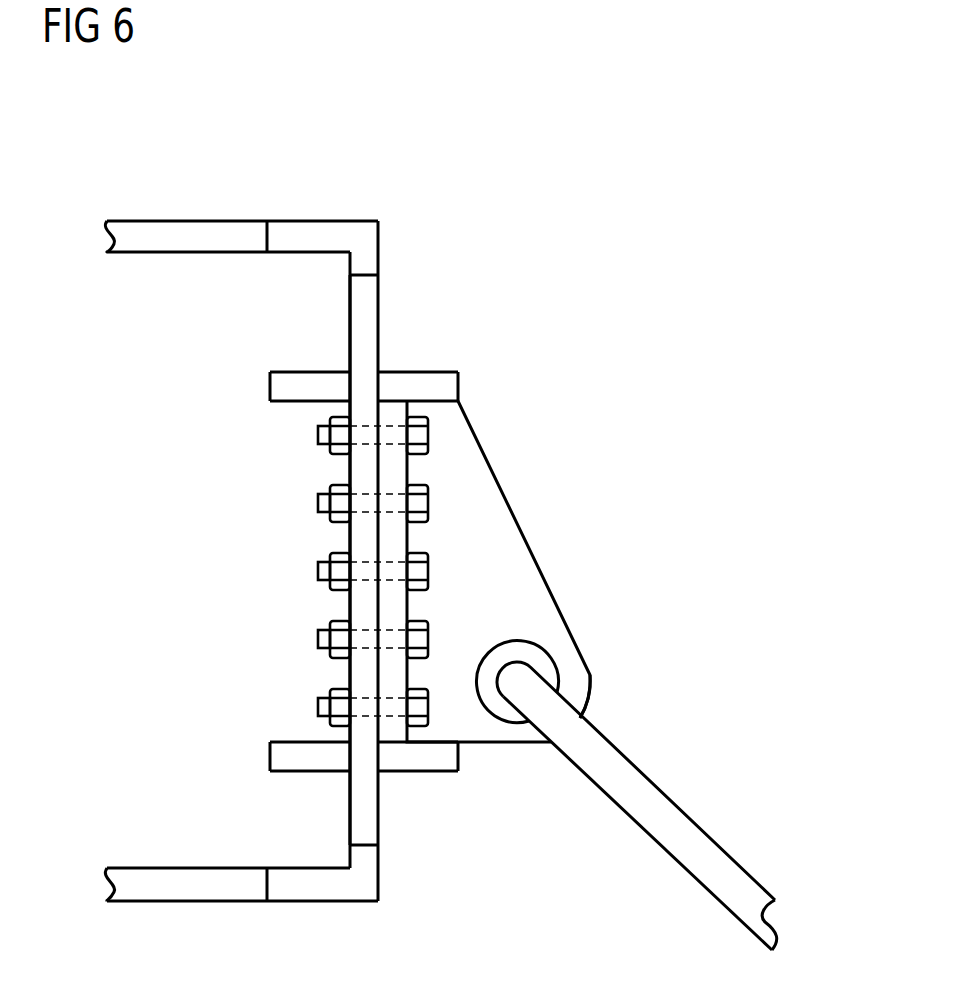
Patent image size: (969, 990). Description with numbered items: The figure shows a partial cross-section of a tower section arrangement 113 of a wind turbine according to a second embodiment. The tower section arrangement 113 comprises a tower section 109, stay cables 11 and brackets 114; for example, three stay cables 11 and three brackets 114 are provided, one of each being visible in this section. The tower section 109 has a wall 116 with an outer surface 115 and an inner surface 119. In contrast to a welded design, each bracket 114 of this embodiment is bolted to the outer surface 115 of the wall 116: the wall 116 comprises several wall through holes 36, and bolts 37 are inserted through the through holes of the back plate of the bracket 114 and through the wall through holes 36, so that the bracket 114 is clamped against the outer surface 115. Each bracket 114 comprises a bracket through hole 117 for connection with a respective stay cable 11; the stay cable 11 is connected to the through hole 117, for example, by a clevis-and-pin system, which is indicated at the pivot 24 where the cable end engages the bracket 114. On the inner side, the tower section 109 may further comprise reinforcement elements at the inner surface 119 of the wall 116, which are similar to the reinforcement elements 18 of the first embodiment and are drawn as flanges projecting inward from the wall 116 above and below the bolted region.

The tower section 109 is at (380, 250).
The wall 116 is at (380, 312).
The outer surface 115 is at (381, 332).
The inner surface 119 is at (348, 320).
The reinforcement elements 18 is at (270, 386).
The wall through holes 36 is at (372, 443).
The bolts 37 is at (428, 437).
The bracket 114 is at (507, 550).
The bracket through hole 117 is at (534, 668).
The pivot joint 24 is at (574, 704).
The stay cables 11 is at (695, 823).
The tower section arrangement 113 is at (668, 150).